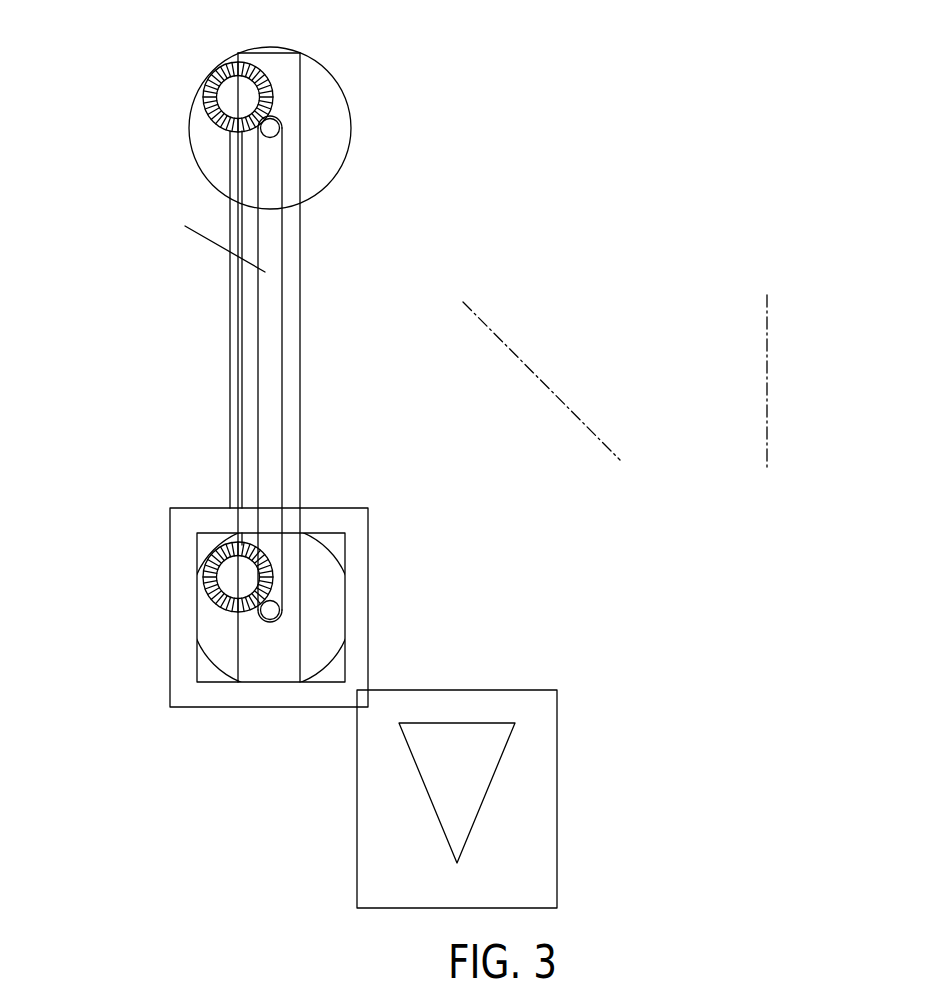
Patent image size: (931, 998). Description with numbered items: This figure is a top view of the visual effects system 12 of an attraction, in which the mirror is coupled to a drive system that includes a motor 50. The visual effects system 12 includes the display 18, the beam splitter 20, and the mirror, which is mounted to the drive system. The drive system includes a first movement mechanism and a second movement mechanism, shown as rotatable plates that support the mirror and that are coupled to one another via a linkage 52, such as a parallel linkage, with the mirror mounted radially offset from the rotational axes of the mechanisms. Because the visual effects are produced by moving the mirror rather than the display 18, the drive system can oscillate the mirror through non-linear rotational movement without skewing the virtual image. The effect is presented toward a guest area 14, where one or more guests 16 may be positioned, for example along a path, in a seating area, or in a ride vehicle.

The visual effects system 12 is at (126, 112).
The linkage 52 is at (237, 391).
The motor 50 is at (170, 604).
The guest area 14 is at (357, 853).
The guest 16 is at (417, 772).
The beam splitter 20 is at (543, 380).
The display 18 is at (768, 366).